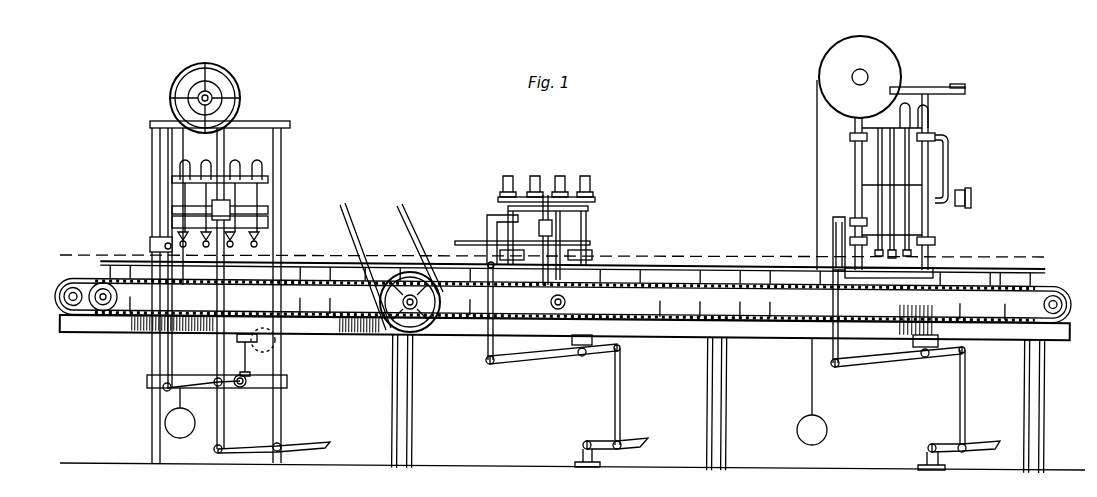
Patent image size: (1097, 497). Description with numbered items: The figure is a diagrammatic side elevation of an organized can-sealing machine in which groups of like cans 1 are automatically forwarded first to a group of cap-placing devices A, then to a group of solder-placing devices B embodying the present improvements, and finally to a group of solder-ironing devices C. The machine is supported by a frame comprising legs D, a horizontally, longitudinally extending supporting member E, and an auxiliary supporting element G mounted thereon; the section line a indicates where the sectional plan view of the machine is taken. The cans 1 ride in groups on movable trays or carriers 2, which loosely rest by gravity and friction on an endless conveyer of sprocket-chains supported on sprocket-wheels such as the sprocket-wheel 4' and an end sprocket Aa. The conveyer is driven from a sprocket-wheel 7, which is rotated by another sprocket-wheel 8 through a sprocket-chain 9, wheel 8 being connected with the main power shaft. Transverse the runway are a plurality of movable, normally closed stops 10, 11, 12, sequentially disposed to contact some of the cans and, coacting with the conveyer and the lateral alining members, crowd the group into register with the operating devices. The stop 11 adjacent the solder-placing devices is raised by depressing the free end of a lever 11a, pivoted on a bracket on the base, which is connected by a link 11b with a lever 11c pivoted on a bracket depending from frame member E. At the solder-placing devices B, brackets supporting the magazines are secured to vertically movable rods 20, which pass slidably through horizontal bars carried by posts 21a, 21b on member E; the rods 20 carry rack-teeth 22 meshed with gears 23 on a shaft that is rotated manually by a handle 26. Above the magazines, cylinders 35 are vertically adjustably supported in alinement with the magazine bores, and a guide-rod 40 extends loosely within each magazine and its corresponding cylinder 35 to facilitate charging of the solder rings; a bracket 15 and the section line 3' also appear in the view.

The cap-placing devices A is at (905, 157).
The solder-placing devices B is at (588, 228).
The solder-ironing devices C is at (230, 263).
The legs D is at (412, 440).
The supporting member E is at (687, 357).
The auxiliary supporting element G is at (684, 305).
The section line a is at (545, 252).
The end roller Aa is at (64, 290).
The cans 1 is at (284, 255).
The trays or carriers 2 is at (285, 264).
The sprocket 3' is at (542, 277).
The sprocket-wheel 4' is at (1032, 336).
The sprocket-wheel 7 is at (110, 310).
The sprocket-wheel 8 is at (395, 332).
The sprocket-chain 9 is at (345, 328).
The stop 10 is at (833, 268).
The stop 11 is at (487, 262).
The lever 11a is at (490, 358).
The link 11b is at (622, 398).
The lever 11c is at (540, 358).
The stop 12 is at (150, 243).
The bracket 15 is at (600, 252).
The vertically movable rods 20 is at (545, 200).
The post 21a is at (490, 291).
The post 21b is at (605, 220).
The rack-teeth 22 is at (548, 290).
The gears 23 is at (548, 338).
The handle 26 is at (622, 286).
The cylinders 35 is at (510, 190).
The guide-rod 40 is at (505, 205).